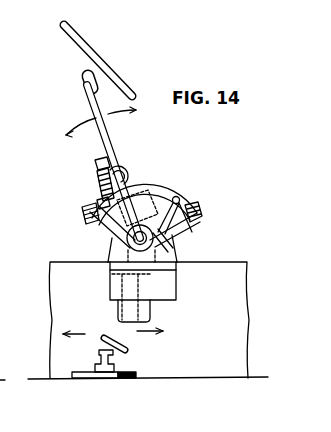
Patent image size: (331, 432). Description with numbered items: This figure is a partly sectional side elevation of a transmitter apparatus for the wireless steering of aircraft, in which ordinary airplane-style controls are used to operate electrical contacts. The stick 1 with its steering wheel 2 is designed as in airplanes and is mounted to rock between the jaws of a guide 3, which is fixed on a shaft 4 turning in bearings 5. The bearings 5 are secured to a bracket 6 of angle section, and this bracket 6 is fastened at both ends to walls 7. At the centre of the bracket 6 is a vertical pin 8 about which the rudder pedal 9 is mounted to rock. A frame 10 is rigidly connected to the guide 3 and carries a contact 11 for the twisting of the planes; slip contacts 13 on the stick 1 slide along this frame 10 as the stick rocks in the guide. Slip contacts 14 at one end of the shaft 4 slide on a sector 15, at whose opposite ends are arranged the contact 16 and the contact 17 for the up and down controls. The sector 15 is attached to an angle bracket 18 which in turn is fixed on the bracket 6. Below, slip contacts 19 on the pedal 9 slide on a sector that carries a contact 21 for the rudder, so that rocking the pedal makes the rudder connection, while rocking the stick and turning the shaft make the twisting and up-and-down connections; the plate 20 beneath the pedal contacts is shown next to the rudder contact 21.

The stick 1 is at (92, 97).
The steering wheel 2 is at (78, 37).
The guide 3 is at (134, 200).
The shaft 4 is at (167, 240).
The bearings 5 is at (147, 238).
The bracket 6 is at (168, 288).
The walls 7 is at (240, 292).
The vertical pin 8 is at (138, 313).
The rudder pedal 9 is at (113, 343).
The frame 10 is at (95, 163).
The contact 11 is at (97, 184).
The slip contacts 13 is at (118, 165).
The slip contacts 14 is at (96, 203).
The sector 15 is at (171, 193).
The contact 16 is at (85, 222).
The contact 17 is at (203, 212).
The angle bracket 18 is at (178, 262).
The slip contacts 19 is at (100, 368).
The plate 20 is at (82, 380).
The contact 21 is at (129, 380).